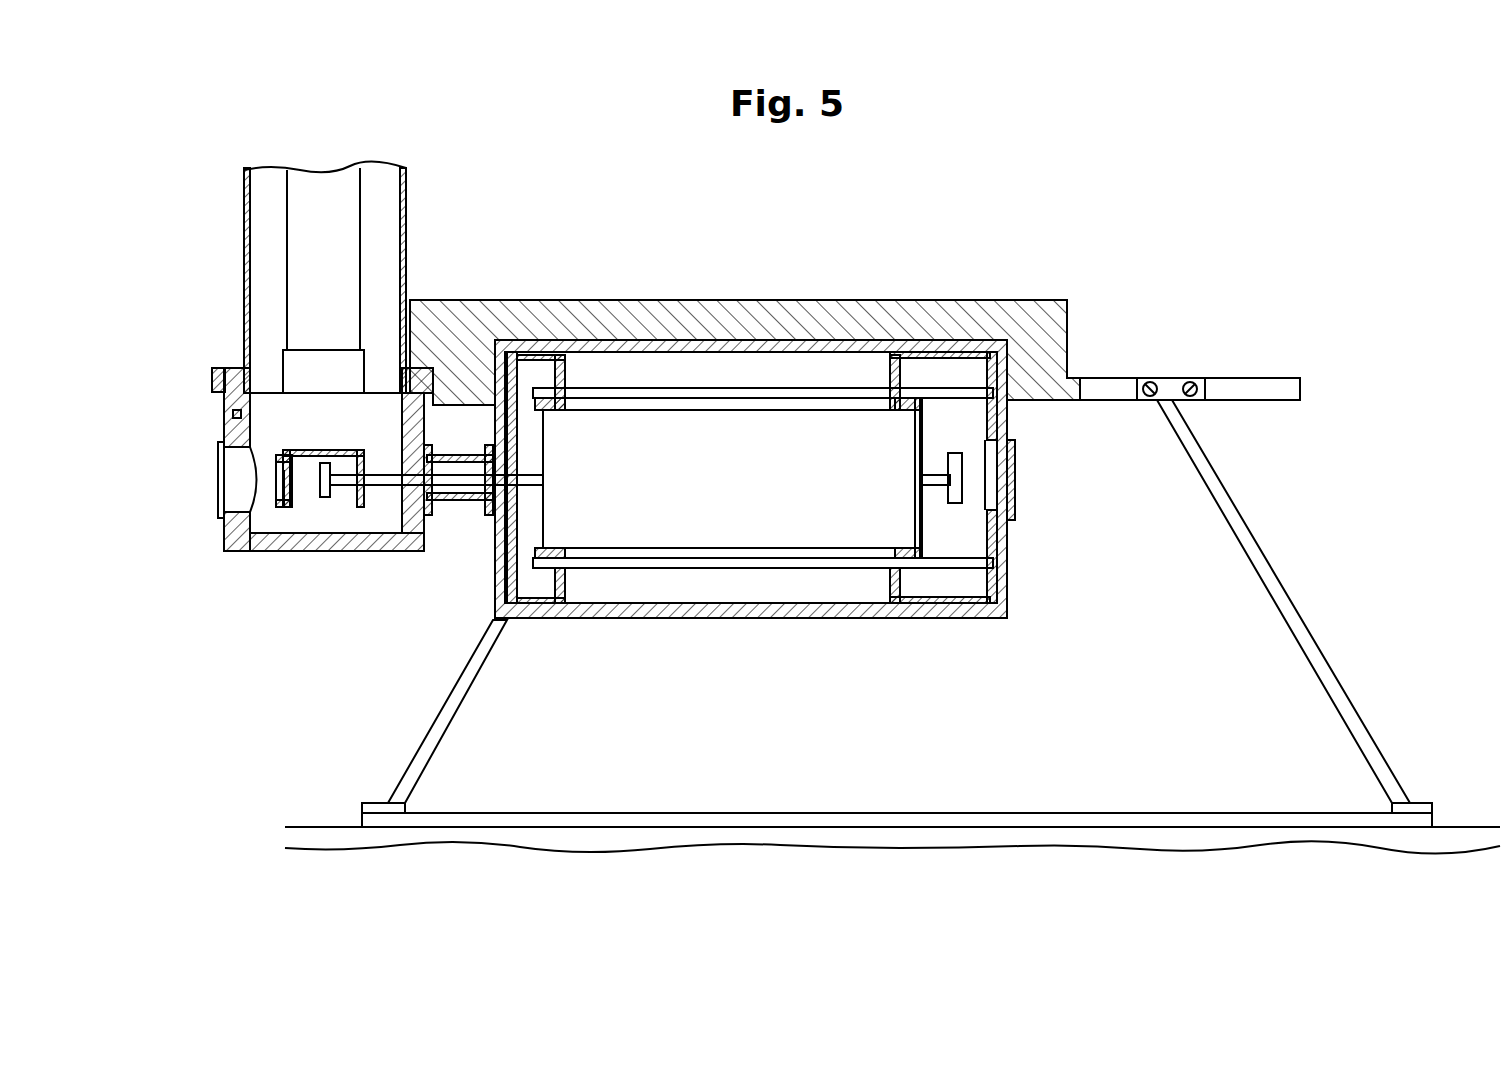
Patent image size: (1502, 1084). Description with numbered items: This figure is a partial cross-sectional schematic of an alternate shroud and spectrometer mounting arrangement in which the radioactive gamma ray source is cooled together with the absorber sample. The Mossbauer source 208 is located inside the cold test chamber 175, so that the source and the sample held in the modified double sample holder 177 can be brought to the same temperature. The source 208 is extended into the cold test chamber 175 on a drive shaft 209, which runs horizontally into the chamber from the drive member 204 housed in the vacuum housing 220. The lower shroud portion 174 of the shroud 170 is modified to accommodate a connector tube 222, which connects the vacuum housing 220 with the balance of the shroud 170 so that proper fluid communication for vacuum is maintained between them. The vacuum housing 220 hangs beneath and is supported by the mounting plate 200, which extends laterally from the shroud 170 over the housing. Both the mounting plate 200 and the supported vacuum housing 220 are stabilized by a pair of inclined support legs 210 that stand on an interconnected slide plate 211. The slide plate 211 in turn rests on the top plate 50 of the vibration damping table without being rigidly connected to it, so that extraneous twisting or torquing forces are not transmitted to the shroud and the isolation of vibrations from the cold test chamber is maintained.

The shroud 170 is at (428, 195).
The lower shroud portion 174 is at (201, 425).
The cold test chamber 175 is at (308, 475).
The sample holder 177 is at (285, 503).
The mounting plate 200 is at (535, 306).
The roller 204 is at (745, 447).
The Mossbauer source 208 is at (320, 497).
The drive shaft 209 is at (380, 483).
The support legs 210 is at (483, 660).
The slide plate 211 is at (710, 820).
The vacuum housing 220 is at (818, 618).
The connector tube 222 is at (465, 500).
The top plate 50 is at (318, 828).